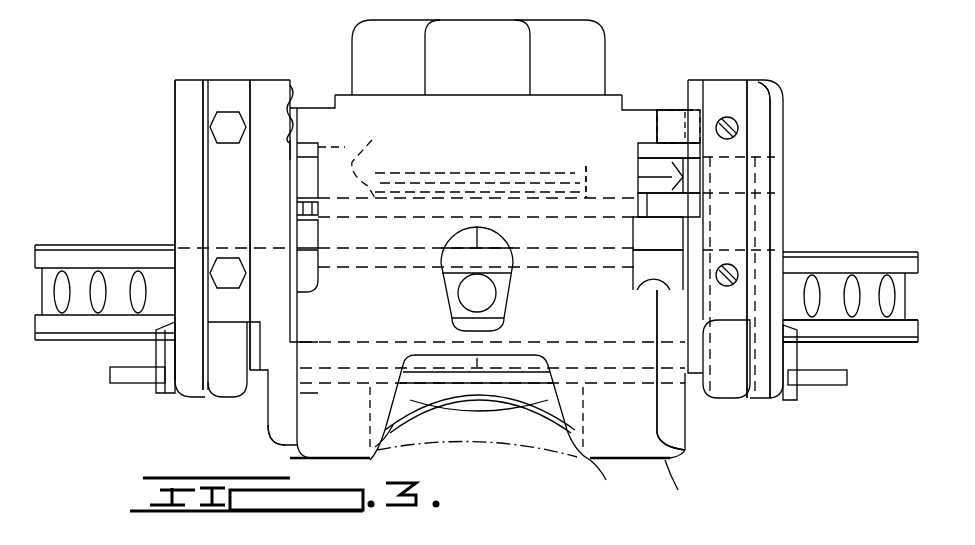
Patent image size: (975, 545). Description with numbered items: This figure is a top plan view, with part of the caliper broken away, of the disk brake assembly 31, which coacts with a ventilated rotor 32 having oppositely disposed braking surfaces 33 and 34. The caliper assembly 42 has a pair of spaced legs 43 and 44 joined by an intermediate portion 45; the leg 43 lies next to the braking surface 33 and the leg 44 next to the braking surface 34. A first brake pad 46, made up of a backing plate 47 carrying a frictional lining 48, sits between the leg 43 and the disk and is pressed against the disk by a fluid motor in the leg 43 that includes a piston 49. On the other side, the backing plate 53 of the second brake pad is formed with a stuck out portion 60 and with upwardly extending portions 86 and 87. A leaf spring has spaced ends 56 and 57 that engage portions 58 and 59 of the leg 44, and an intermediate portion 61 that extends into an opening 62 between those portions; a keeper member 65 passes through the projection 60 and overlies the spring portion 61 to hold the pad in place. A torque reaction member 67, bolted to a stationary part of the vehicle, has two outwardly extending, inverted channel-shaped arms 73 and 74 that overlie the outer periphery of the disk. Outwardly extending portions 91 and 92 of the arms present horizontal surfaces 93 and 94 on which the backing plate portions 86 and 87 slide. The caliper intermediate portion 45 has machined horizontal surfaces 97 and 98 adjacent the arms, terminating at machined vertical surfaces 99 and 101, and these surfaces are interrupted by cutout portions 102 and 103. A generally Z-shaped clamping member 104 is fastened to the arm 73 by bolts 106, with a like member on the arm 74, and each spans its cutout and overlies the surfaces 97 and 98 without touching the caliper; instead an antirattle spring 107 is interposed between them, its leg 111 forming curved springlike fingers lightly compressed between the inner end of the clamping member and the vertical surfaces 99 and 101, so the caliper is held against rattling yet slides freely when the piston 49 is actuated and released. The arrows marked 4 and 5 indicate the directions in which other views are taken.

The caliper assembly 42 is at (613, 50).
The caliper leg 43 is at (322, 97).
The disk brake assembly 31 is at (641, 78).
The torque reaction member 67 is at (172, 96).
The clamping member 104 is at (236, 88).
The antirattle spring 107 is at (284, 76).
The arm 73 is at (187, 192).
The bolt 106 is at (225, 116).
The leg 111 is at (290, 152).
The piston 49 is at (409, 201).
The cutout portion 102 is at (305, 178).
The backing plate 47 is at (588, 170).
The intermediate portion 45 is at (515, 250).
The cutout portion 103 is at (632, 250).
The first brake pad 46 is at (705, 196).
The frictional lining 48 is at (660, 282).
The keeper member 65 is at (474, 392).
The stuck out portion 60 is at (471, 406).
The backing plate 53 is at (490, 402).
The intermediate portion 61 is at (390, 428).
The opening 62 is at (548, 446).
The vertically extending surface 99 is at (302, 395).
The vertically extending surface 101 is at (660, 356).
The horizontally disposed surface 93 is at (163, 357).
The horizontal surface 97 is at (270, 410).
The portion of caliper leg 58 is at (268, 438).
The spring end 56 is at (297, 458).
The caliper leg 44 is at (680, 445).
The spring end 57 is at (598, 458).
The portion of caliper leg 59 is at (668, 460).
The horizontal surface 98 is at (677, 413).
The horizontally disposed surface 94 is at (778, 360).
The rotor 32 is at (806, 250).
The braking surface 33 is at (859, 250).
The outwardly extending portion 91 is at (163, 394).
The upwardly extending portion 86 is at (122, 386).
The outwardly extending portion 92 is at (790, 400).
The upwardly extending portion 87 is at (822, 390).
The braking surface 34 is at (865, 393).
The arm 74 is at (775, 91).
The section line 4- 4 is at (152, 262).
The section line 5- 5 is at (97, 354).